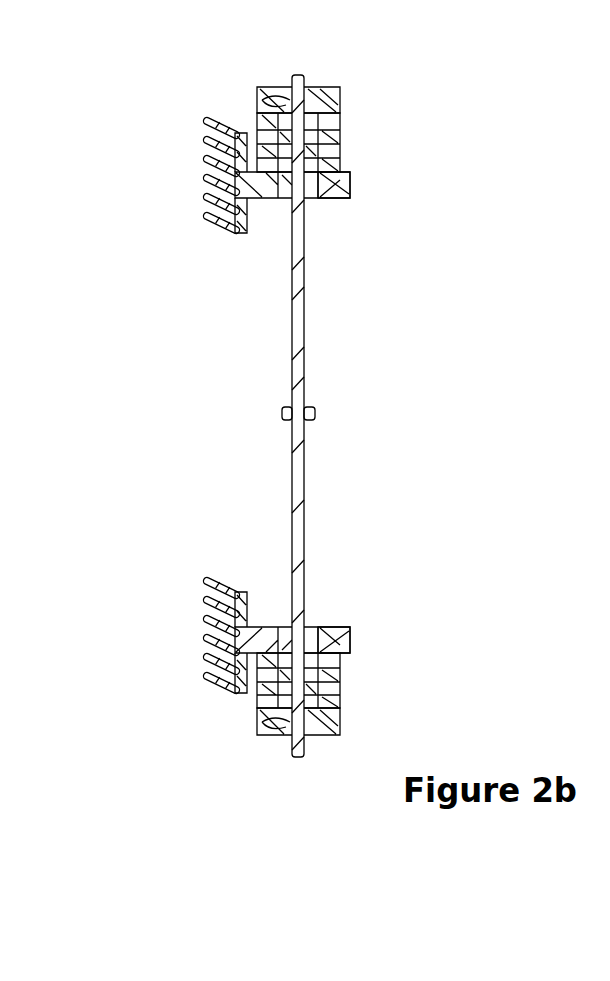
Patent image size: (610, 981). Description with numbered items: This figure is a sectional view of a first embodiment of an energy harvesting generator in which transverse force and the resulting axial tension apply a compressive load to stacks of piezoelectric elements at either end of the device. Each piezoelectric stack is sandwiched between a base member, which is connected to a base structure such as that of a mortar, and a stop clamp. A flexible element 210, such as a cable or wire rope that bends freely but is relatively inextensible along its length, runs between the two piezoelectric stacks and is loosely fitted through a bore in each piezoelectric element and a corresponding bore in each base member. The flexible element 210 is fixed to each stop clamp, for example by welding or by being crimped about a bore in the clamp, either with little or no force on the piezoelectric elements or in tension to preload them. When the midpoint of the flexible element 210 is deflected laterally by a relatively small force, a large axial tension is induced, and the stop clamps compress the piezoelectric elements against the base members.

The flexible element 210 is at (314, 476).